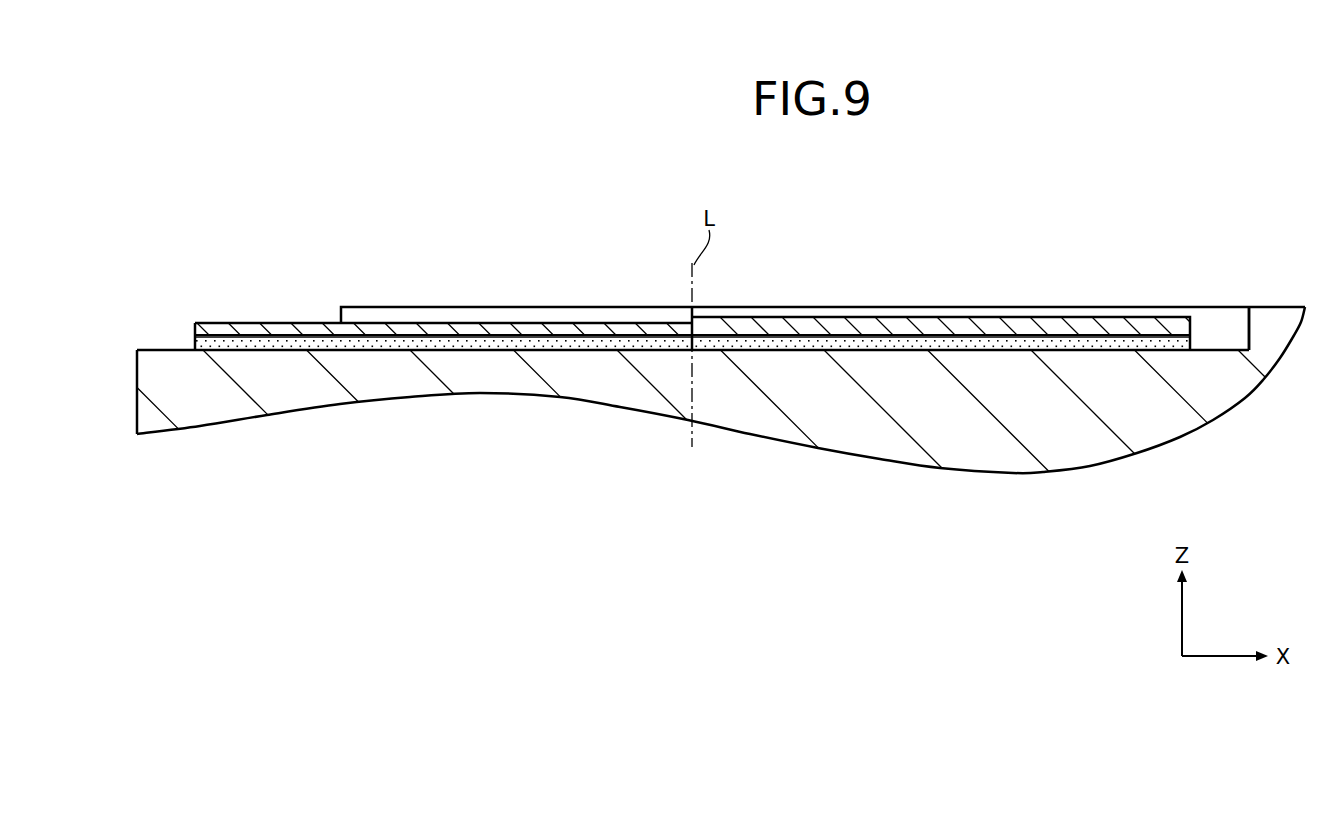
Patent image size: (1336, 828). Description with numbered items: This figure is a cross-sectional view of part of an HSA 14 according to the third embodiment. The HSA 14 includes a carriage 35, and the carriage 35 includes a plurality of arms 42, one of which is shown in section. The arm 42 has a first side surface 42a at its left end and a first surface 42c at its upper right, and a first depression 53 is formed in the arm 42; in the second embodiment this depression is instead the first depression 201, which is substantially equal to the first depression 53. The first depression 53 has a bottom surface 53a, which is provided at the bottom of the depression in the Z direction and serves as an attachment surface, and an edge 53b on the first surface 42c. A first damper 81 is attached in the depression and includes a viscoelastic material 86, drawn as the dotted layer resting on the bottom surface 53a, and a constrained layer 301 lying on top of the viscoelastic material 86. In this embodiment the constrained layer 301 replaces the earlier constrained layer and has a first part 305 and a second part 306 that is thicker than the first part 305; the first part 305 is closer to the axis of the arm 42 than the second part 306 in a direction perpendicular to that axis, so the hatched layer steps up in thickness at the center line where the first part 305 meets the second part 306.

The HSA 14 is at (672, 267).
The first depression 53 is at (671, 293).
The first depression 201 is at (722, 328).
The bottom surface 53a is at (177, 348).
The edge 53b is at (1248, 306).
The arm 42 is at (707, 376).
The first side surface 42a is at (133, 420).
The first surface 42c is at (1277, 306).
The carriage 35 is at (1262, 398).
The viscoelastic material 86 is at (403, 345).
The constrained layer 301 is at (438, 291).
The first part 305 is at (463, 328).
The second part 306 is at (833, 328).
The first damper 81 is at (643, 312).